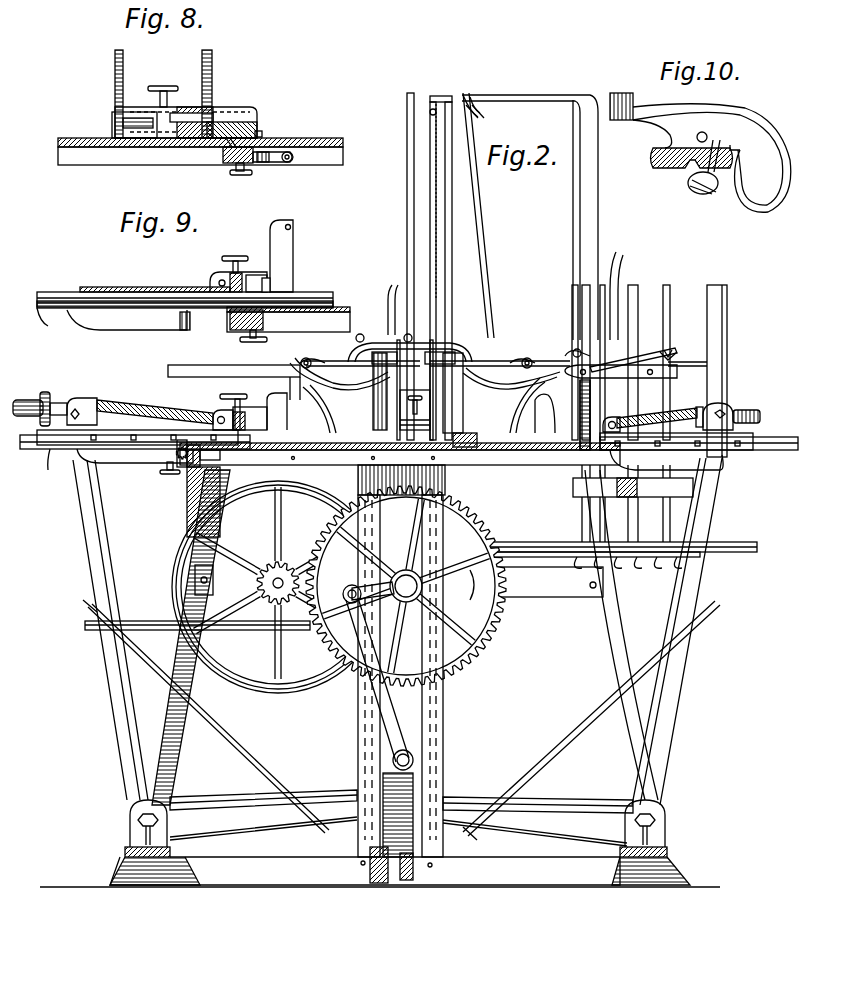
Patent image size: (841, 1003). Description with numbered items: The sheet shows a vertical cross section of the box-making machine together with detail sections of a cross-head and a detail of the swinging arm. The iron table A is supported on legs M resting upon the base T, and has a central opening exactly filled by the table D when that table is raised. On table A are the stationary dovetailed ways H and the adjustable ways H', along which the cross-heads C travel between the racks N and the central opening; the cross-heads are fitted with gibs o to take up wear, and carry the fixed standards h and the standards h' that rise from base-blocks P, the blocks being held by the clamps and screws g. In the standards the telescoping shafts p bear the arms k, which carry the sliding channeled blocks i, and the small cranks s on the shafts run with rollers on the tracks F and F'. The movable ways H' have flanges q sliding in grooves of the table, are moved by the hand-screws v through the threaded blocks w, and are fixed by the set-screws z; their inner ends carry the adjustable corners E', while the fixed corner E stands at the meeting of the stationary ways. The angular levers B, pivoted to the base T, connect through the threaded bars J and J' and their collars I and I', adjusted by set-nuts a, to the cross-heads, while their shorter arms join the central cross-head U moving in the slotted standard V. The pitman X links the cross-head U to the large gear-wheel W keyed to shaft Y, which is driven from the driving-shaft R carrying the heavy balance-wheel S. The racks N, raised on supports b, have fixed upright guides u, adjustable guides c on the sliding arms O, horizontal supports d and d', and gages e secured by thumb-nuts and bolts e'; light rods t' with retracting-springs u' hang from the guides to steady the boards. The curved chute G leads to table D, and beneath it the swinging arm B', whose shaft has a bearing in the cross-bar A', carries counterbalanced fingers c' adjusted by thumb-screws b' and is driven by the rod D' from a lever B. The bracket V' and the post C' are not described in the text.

In FIG. 8, the iron table A is at (200, 152).
In FIG. 9, the iron table A is at (288, 320).
In FIG. 2, the iron table A is at (400, 454).
In FIG. 8, the cross-head C is at (186, 113).
In FIG. 9, the cross-head C is at (185, 288).
In FIG. 2, the cross-head C is at (395, 439).
In FIG. 8, the base-block P is at (134, 113).
In FIG. 2, the base-block P is at (250, 416).
In FIG. 8, the threaded bar J' is at (191, 113).
In FIG. 2, the threaded bar J' is at (165, 409).
In FIG. 8, the standard h' is at (127, 94).
In FIG. 8, the fixed standard h is at (213, 94).
In FIG. 9, the fixed standard h is at (277, 256).
In FIG. 2, the fixed standard h is at (411, 413).
In FIG. 8, the clamp and screw g is at (163, 87).
In FIG. 9, the clamp and screw g is at (235, 264).
In FIG. 2, the clamp and screw g is at (321, 404).
In FIG. 8, the adjustable dovetailed way H' is at (245, 122).
In FIG. 9, the adjustable dovetailed way H' is at (185, 290).
In FIG. 8, the gib o is at (266, 129).
In FIG. 8, the block w is at (258, 164).
In FIG. 9, the block w is at (255, 320).
In FIG. 2, the block w is at (204, 457).
In FIG. 8, the hand-screw v is at (292, 157).
In FIG. 2, the hand-screw v is at (174, 457).
In FIG. 8, the flange q is at (228, 160).
In FIG. 9, the flange q is at (47, 322).
In FIG. 2, the flange q is at (48, 461).
In FIG. 8, the set-screw z is at (241, 177).
In FIG. 9, the set-screw z is at (253, 343).
In FIG. 2, the set-screw z is at (31, 398).
In FIG. 9, the telescoping shaft p is at (238, 277).
In FIG. 9, the bracket V' is at (128, 322).
In FIG. 2, the bracket V' is at (400, 459).
In FIG. 10, the pivoted finger c' is at (700, 152).
In FIG. 2, the pivoted finger c' is at (618, 566).
In FIG. 10, the swinging arm B' is at (691, 157).
In FIG. 2, the swinging arm B' is at (575, 559).
In FIG. 10, the thumb-screw b' is at (704, 177).
In FIG. 2, the thumb-screw b' is at (638, 571).
In FIG. 2, the light rod t' is at (457, 266).
In FIG. 2, the fixed upright guide u is at (514, 267).
In FIG. 2, the retracting-spring u' is at (456, 199).
In FIG. 2, the adjustable upright guide c is at (395, 296).
In FIG. 2, the gage e is at (621, 296).
In FIG. 2, the post C' is at (661, 371).
In FIG. 2, the transversely sliding arm O is at (613, 345).
In FIG. 2, the small crank s is at (414, 354).
In FIG. 2, the channeled block i is at (417, 351).
In FIG. 2, the arm k is at (438, 355).
In FIG. 2, the track F is at (425, 379).
In FIG. 2, the support b is at (446, 414).
In FIG. 2, the acute-angled corner E' is at (369, 391).
In FIG. 2, the fixed corner E is at (437, 393).
In FIG. 2, the track F' is at (234, 373).
In FIG. 2, the collar I' is at (73, 401).
In FIG. 2, the stationary dovetailed way H is at (405, 434).
In FIG. 2, the adjustable rack N is at (621, 374).
In FIG. 2, the horizontal arm d is at (633, 354).
In FIG. 2, the thumb-nut and bolt e' is at (683, 355).
In FIG. 2, the threaded bar J is at (650, 415).
In FIG. 2, the support d' is at (689, 413).
In FIG. 2, the collar I is at (718, 408).
In FIG. 2, the set-nut a is at (705, 406).
In FIG. 2, the curved chute G is at (540, 542).
In FIG. 2, the cross-bar A' is at (531, 582).
In FIG. 2, the angular lever B is at (395, 631).
In FIG. 2, the leg M is at (405, 637).
In FIG. 2, the rod D' is at (197, 614).
In FIG. 2, the balance-wheel S is at (278, 596).
In FIG. 2, the driving-shaft R is at (258, 584).
In FIG. 2, the large gear-wheel W is at (486, 617).
In FIG. 2, the shaft Y is at (406, 586).
In FIG. 2, the table D is at (481, 585).
In FIG. 2, the pitman X is at (365, 700).
In FIG. 2, the cross-head U is at (379, 684).
In FIG. 2, the slotted standard V is at (411, 674).
In FIG. 2, the base T is at (125, 862).